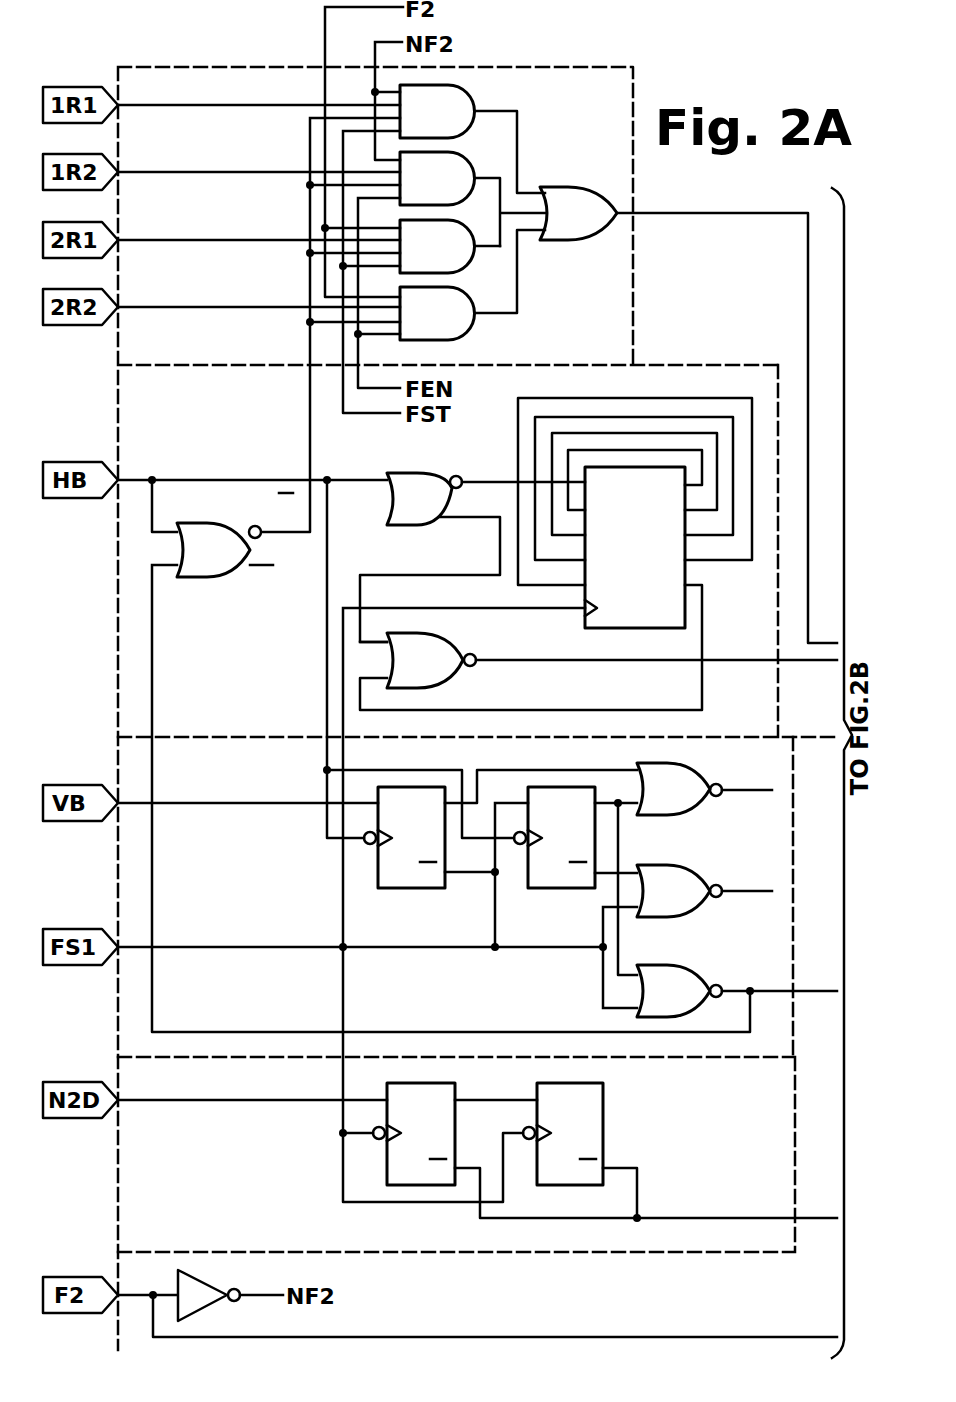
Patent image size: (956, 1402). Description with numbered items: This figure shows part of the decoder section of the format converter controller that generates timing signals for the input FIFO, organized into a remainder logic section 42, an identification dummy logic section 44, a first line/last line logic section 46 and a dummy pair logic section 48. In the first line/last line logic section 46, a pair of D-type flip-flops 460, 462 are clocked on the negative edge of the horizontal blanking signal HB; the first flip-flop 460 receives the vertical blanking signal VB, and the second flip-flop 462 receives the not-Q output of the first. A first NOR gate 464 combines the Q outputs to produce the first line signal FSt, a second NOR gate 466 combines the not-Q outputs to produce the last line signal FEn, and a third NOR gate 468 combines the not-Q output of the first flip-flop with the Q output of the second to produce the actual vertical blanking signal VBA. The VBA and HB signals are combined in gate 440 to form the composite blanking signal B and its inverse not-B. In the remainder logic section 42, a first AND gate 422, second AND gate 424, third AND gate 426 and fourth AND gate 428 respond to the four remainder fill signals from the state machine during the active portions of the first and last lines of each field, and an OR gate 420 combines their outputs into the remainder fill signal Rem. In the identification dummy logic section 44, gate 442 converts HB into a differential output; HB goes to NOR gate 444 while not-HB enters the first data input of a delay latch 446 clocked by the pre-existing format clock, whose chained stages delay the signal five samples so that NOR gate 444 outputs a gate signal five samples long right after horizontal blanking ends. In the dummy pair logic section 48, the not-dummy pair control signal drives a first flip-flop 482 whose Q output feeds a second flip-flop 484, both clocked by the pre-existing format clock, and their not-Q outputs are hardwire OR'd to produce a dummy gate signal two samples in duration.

The remainder logic section 42 is at (638, 88).
The OR gate 420 is at (606, 240).
The first AND gate 422 is at (478, 106).
The second AND gate 424 is at (478, 165).
The third AND gate 426 is at (472, 262).
The fourth AND gate 428 is at (474, 330).
The identification dummy logic section 44 is at (702, 352).
The gate 440 is at (190, 580).
The gate 442 is at (400, 467).
The NOR gate 444 is at (452, 672).
The delay latch 446 is at (598, 625).
The first line/last line logic section 46 is at (262, 732).
The first flip-flop 460 is at (440, 895).
The second flip-flop 462 is at (590, 898).
The first NOR gate 464 is at (675, 818).
The second NOR gate 466 is at (675, 918).
The third NOR gate 468 is at (678, 966).
The dummy pair logic section 48 is at (648, 1255).
The first flip-flop 482 is at (428, 1202).
The second flip-flop 484 is at (645, 1118).